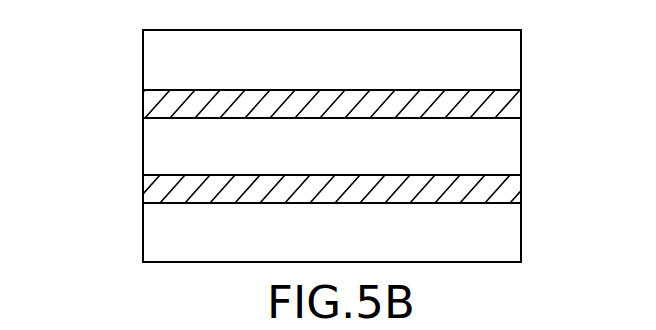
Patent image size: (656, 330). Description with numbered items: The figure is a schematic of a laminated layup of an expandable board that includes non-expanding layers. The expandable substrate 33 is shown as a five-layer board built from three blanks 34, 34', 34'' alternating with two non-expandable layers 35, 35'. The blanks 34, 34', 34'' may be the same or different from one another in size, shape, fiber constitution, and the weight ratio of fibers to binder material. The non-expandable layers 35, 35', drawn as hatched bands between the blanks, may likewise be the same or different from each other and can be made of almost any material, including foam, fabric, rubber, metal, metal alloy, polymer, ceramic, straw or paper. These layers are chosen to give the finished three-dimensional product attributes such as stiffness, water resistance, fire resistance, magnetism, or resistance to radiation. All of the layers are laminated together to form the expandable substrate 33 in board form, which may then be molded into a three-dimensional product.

The expandable substrate 33 is at (137, 162).
The blank 34 is at (371, 60).
The non-expandable layer 35 is at (360, 97).
The blank 34' is at (373, 146).
The non-expandable layer 35' is at (369, 184).
The blank 34'' is at (376, 232).